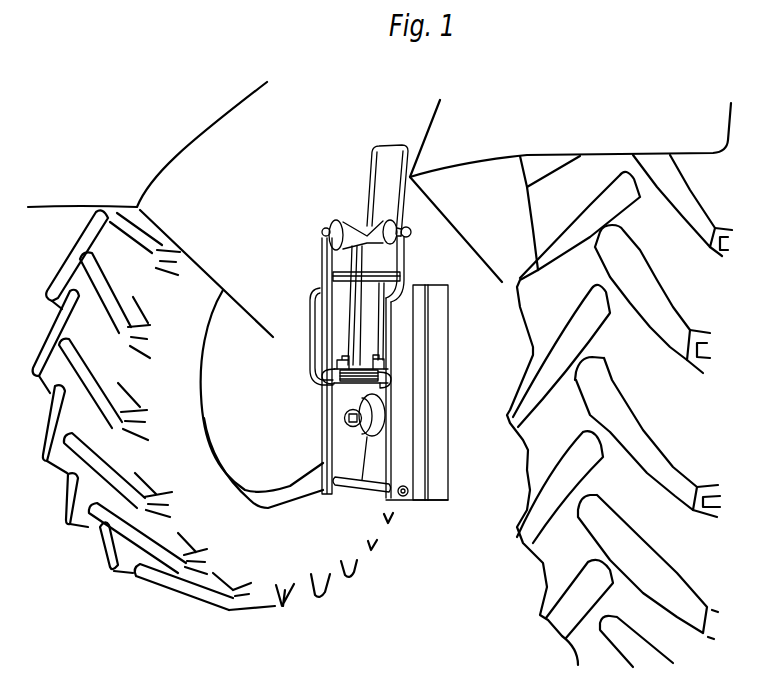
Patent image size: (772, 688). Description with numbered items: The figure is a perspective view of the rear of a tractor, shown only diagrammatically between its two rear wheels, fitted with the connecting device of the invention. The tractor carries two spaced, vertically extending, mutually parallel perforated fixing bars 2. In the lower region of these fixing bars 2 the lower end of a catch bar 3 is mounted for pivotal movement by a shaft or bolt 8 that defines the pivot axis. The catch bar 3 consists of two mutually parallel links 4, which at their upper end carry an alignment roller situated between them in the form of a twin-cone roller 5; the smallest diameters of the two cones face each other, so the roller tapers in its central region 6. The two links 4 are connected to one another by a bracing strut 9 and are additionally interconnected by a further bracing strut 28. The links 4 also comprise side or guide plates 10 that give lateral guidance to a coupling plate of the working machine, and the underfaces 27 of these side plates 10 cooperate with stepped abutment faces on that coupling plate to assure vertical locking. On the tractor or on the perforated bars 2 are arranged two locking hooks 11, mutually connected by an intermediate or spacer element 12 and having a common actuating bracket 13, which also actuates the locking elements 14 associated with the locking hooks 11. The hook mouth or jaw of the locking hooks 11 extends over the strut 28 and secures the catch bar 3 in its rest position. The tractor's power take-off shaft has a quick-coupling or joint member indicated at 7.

The perforated fixing bars 2 is at (339, 462).
The catch bar 3 is at (352, 252).
The links 4 is at (333, 267).
The twin-cone roller 5 is at (340, 225).
The central region 6 is at (370, 230).
The quick-coupling or joint member 7 is at (361, 488).
The shaft or bolt 8 is at (373, 489).
The bracing strut 9 is at (336, 274).
The side or guide plates 10 is at (320, 303).
The locking hooks 11 is at (327, 384).
The intermediate or spacer element 12 is at (363, 366).
The actuating bracket 13 is at (403, 143).
The locking elements 14 is at (340, 360).
The underfaces 27 is at (323, 381).
The bracing strut 28 is at (343, 385).